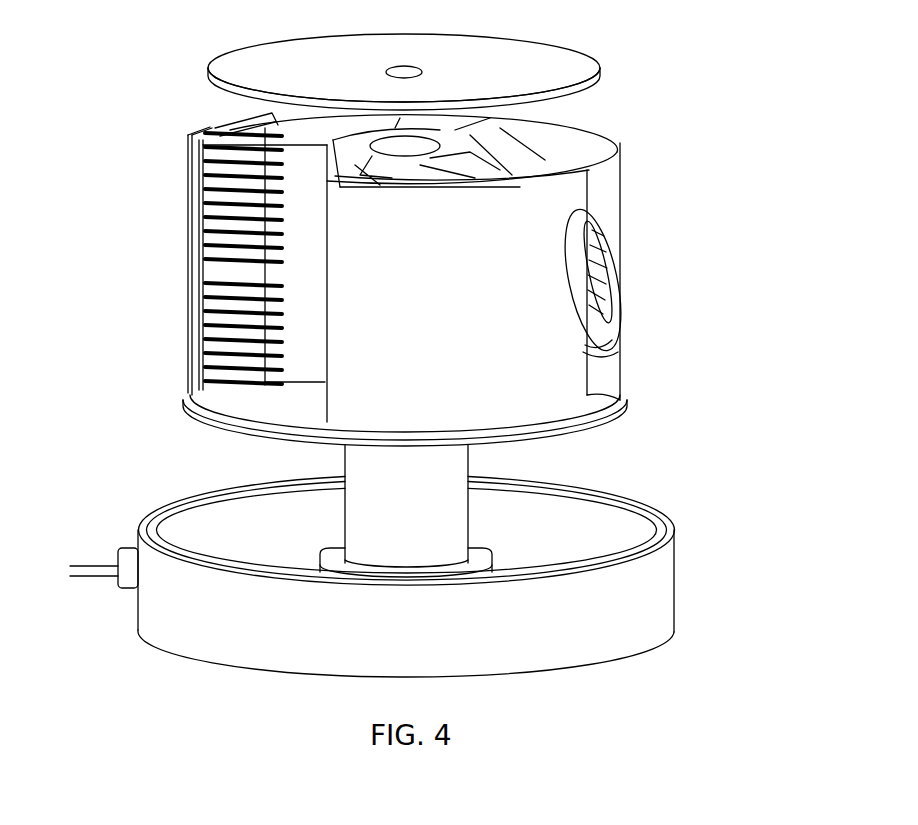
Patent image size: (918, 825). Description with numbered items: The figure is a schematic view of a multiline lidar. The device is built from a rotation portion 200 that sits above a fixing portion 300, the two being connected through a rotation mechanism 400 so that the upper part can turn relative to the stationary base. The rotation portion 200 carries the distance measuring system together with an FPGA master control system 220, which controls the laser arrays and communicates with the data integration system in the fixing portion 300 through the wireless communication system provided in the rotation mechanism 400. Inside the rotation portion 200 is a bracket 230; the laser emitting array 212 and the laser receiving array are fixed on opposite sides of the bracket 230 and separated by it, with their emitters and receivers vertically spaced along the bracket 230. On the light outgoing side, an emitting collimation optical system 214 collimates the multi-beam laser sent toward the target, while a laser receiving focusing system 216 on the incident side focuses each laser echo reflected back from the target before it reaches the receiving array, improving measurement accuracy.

The rotation portion 200 is at (413, 361).
The laser emitting array 212 is at (207, 300).
The emitting collimation optical system 214 is at (594, 330).
The laser receiving focusing system 216 is at (640, 243).
The FPGA master control system 220 is at (598, 73).
The bracket 230 is at (187, 208).
The fixing portion 300 is at (513, 553).
The rotation mechanism 400 is at (463, 498).